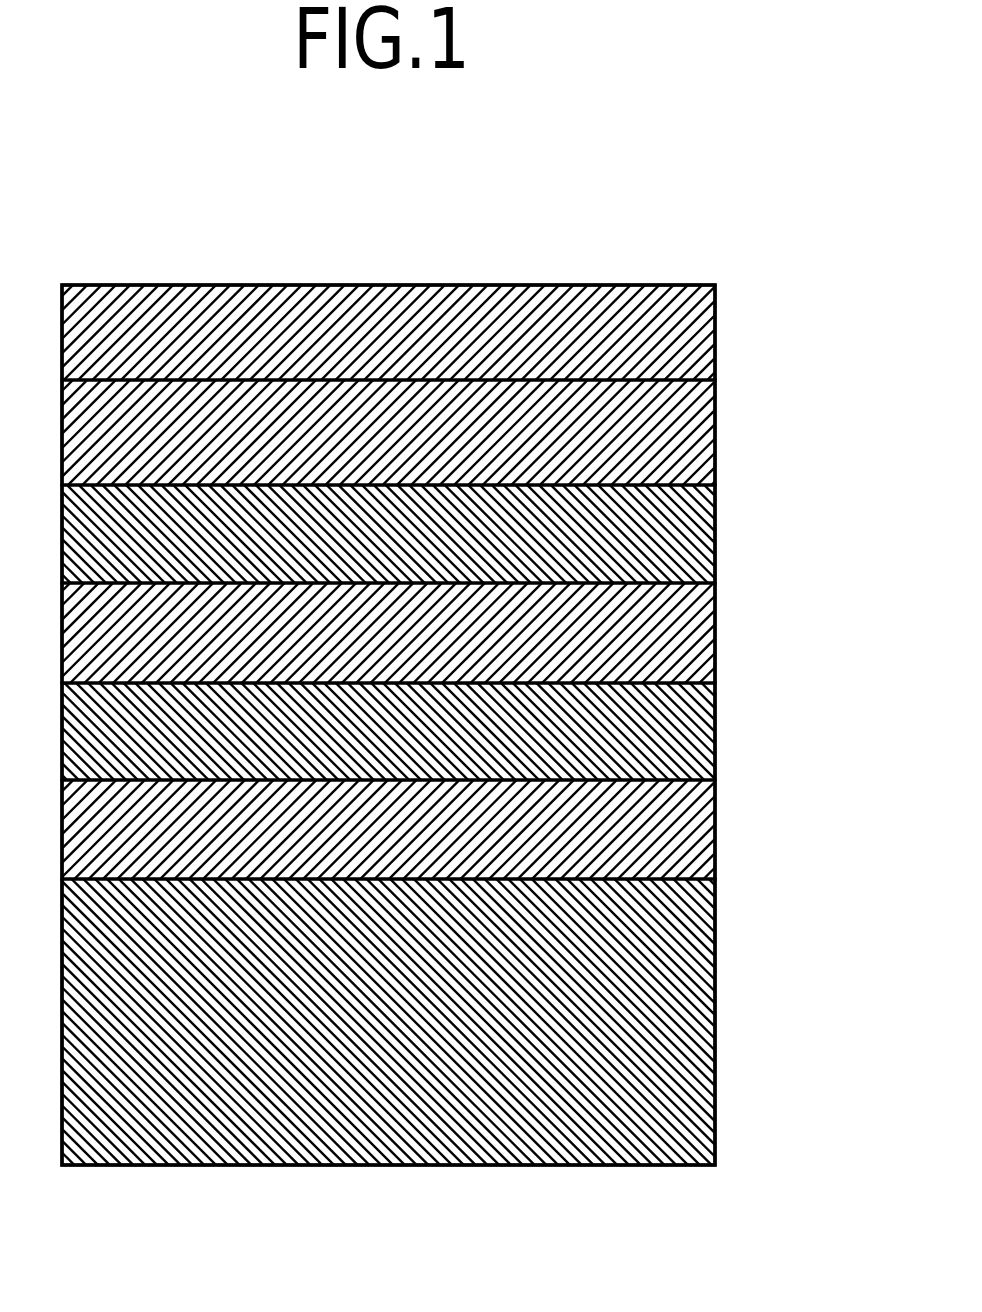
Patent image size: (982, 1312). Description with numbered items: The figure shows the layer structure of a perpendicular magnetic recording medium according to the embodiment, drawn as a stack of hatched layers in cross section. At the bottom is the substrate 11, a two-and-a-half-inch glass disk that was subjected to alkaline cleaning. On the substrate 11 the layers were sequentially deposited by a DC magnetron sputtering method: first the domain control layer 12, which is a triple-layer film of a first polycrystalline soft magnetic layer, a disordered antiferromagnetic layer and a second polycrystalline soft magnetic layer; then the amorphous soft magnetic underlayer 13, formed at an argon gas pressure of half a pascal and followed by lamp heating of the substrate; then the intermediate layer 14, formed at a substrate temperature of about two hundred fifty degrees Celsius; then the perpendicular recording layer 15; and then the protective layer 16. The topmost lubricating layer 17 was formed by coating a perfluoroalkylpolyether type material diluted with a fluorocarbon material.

The substrate 11 is at (680, 1025).
The domain control layer 12 is at (680, 831).
The amorphous soft magnetic underlayer 13 is at (680, 731).
The intermediate layer 14 is at (680, 633).
The perpendicular recording layer 15 is at (680, 535).
The protective layer 16 is at (680, 435).
The lubricating layer 17 is at (680, 335).